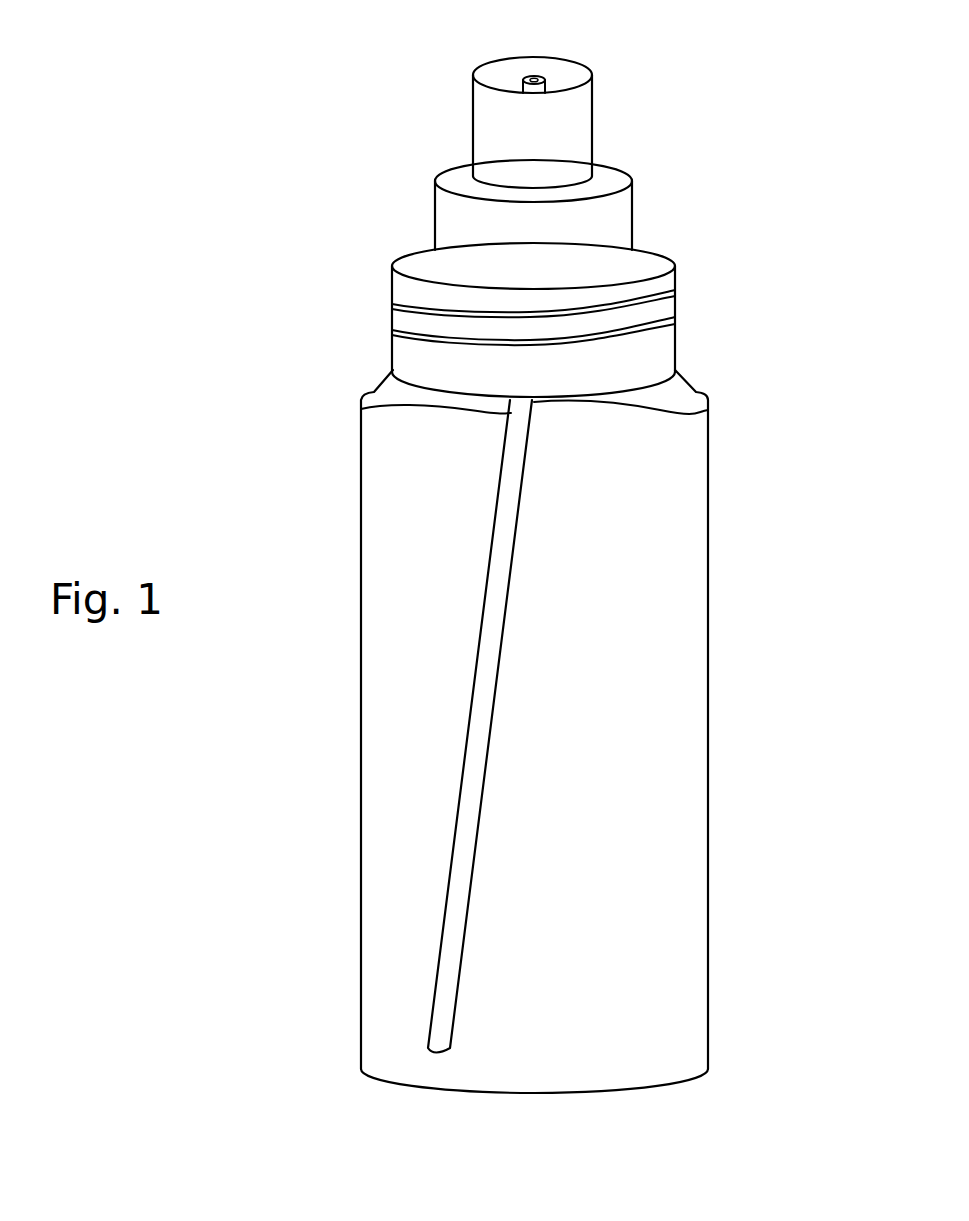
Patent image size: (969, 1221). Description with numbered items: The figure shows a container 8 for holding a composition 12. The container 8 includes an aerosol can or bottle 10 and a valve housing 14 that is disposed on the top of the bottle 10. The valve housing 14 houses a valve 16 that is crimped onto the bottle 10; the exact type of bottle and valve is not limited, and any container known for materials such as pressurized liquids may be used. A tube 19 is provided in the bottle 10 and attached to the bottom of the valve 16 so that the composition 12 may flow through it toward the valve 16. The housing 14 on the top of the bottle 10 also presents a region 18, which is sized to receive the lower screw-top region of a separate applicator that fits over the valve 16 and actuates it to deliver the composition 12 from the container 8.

The container 8 is at (308, 368).
The bottle 10 is at (708, 669).
The composition 12 is at (615, 485).
The valve housing 14 is at (593, 207).
The valve 16 is at (541, 77).
The region 18 is at (676, 292).
The tube 19 is at (502, 567).